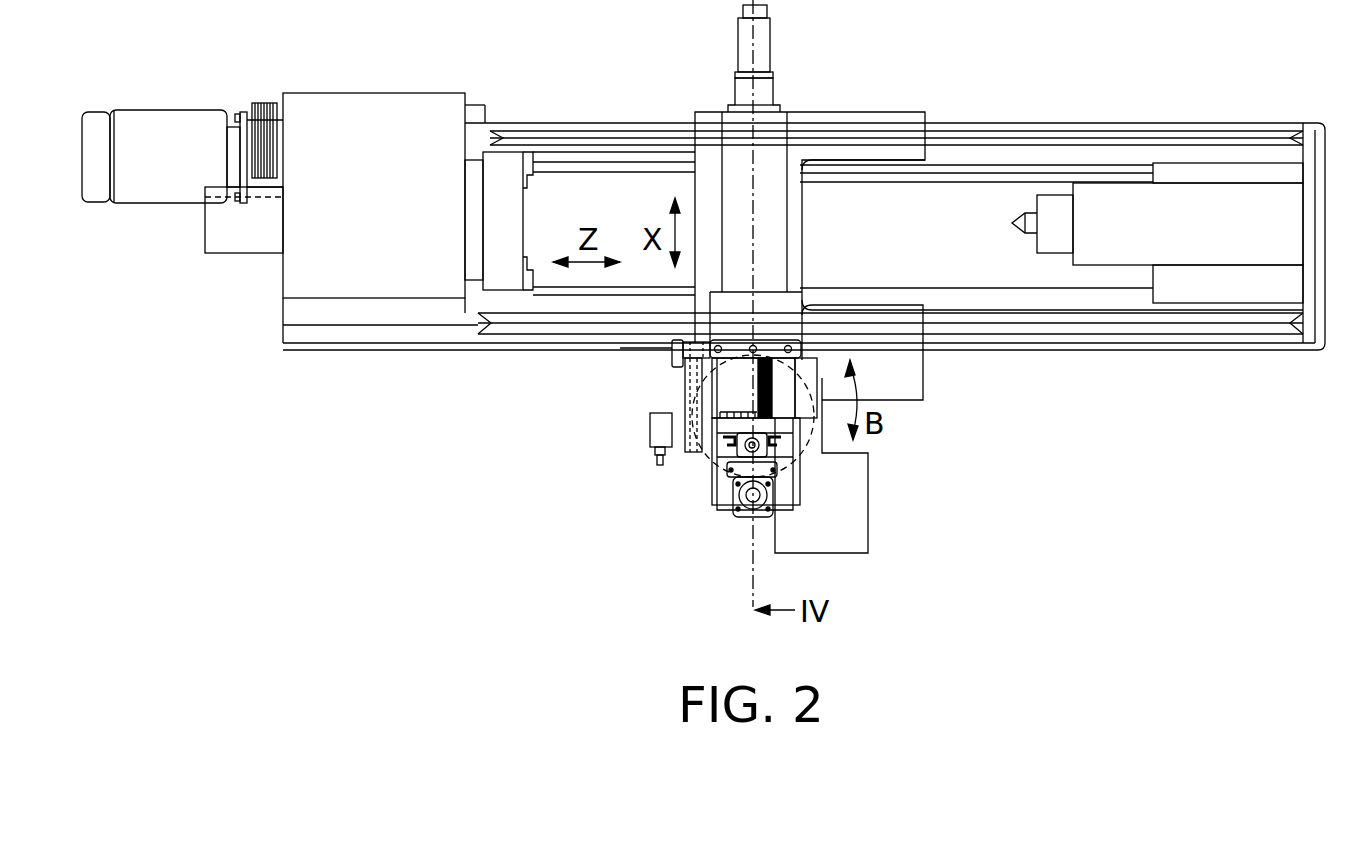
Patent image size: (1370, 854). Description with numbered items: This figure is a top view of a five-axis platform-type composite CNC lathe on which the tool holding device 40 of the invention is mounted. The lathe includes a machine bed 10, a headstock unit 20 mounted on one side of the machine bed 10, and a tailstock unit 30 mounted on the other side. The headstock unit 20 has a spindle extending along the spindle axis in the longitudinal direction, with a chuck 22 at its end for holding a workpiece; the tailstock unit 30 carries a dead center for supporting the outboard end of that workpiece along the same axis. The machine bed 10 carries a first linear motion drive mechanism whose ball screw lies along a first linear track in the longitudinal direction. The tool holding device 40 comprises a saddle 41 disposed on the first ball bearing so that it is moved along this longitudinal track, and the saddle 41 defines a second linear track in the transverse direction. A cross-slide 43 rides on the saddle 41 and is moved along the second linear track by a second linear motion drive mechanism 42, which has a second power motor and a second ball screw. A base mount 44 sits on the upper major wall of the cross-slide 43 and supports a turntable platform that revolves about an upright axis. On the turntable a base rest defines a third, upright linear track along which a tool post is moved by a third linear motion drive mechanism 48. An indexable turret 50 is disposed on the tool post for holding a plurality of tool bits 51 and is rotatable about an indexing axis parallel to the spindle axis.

The machine bed 10 is at (1270, 356).
The headstock unit 20 is at (362, 130).
The chuck 22 is at (511, 165).
The tailstock unit 30 is at (1212, 205).
The tool holding device 40 is at (692, 454).
The saddle 41 is at (702, 128).
The second linear motion drive mechanism 42 is at (771, 55).
The cross-slide 43 is at (783, 320).
The base mount 44 is at (708, 443).
The third linear motion drive mechanism 48 is at (733, 512).
The indexable turret 50 is at (688, 380).
The tool bits 51 is at (672, 340).